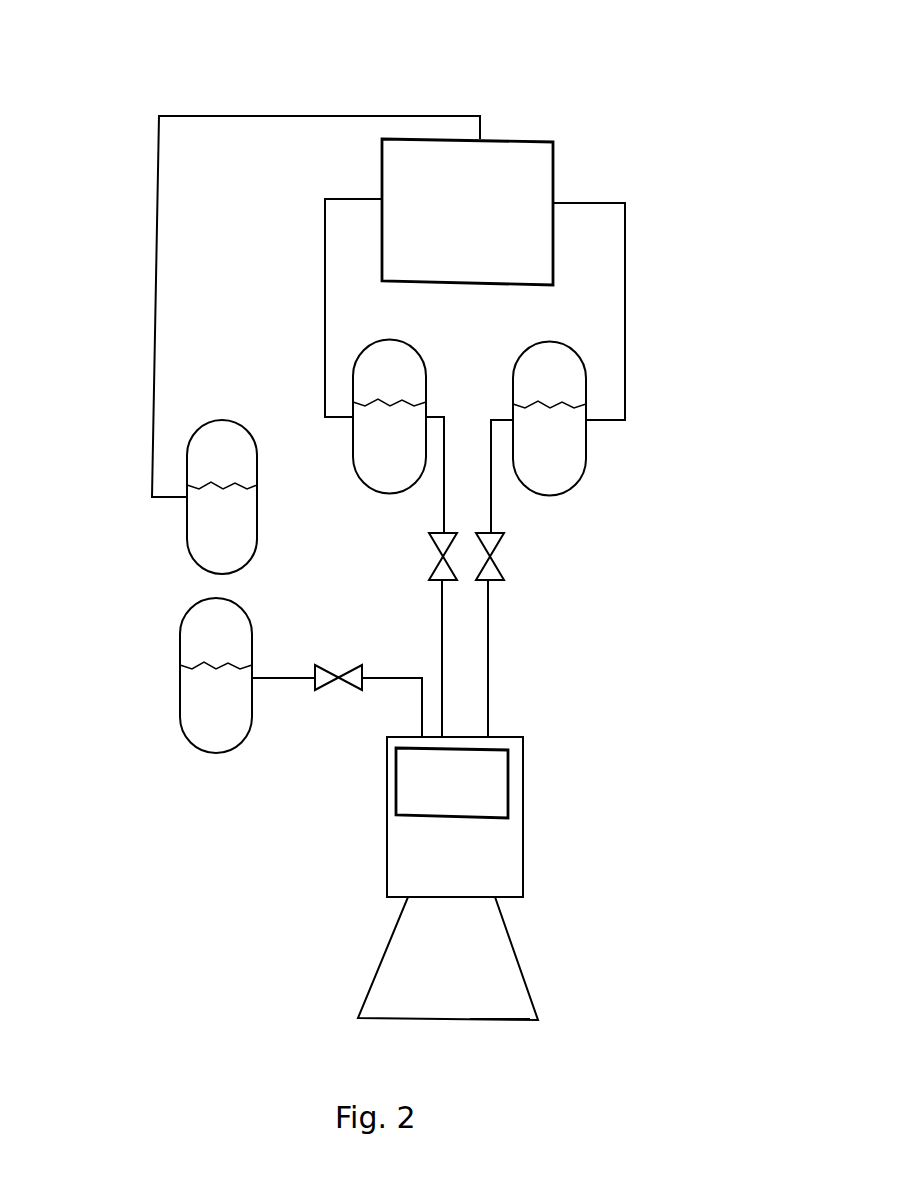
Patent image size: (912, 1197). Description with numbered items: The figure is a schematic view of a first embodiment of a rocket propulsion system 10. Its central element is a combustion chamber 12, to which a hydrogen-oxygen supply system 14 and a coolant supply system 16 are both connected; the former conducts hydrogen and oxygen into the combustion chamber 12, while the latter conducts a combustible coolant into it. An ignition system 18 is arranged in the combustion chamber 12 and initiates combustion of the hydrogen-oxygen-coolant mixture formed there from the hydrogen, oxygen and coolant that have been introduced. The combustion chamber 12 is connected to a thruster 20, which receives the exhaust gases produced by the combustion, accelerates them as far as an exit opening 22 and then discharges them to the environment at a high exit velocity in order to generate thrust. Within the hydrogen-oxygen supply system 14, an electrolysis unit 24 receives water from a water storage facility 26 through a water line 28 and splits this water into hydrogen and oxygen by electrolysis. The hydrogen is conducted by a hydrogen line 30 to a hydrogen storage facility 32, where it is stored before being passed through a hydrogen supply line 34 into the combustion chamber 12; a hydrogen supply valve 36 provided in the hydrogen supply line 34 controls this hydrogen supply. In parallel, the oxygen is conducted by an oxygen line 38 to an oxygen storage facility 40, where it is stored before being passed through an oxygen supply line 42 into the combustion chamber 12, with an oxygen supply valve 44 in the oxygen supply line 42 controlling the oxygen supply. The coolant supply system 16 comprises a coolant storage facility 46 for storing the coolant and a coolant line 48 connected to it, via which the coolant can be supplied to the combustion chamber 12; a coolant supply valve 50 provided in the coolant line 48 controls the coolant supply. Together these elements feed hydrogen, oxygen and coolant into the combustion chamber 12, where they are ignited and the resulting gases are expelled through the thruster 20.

The rocket propulsion system 10 is at (74, 64).
The combustion chamber 12 is at (523, 784).
The hydrogen-oxygen supply system 14 is at (690, 331).
The coolant supply system 16 is at (140, 684).
The ignition system 18 is at (488, 770).
The thruster 20 is at (500, 982).
The exit opening 22 is at (478, 1022).
The electrolysis unit 24 is at (527, 173).
The water storage facility 26 is at (202, 527).
The water line 28 is at (150, 385).
The hydrogen line 30 is at (325, 297).
The hydrogen storage facility 32 is at (392, 465).
The hydrogen supply line 34 is at (438, 605).
The hydrogen supply valve 36 is at (432, 542).
The oxygen line 38 is at (625, 252).
The oxygen storage facility 40 is at (563, 465).
The oxygen supply line 42 is at (492, 628).
The oxygen supply valve 44 is at (497, 548).
The coolant storage facility 46 is at (196, 715).
The coolant line 48 is at (297, 680).
The coolant supply valve 50 is at (362, 690).